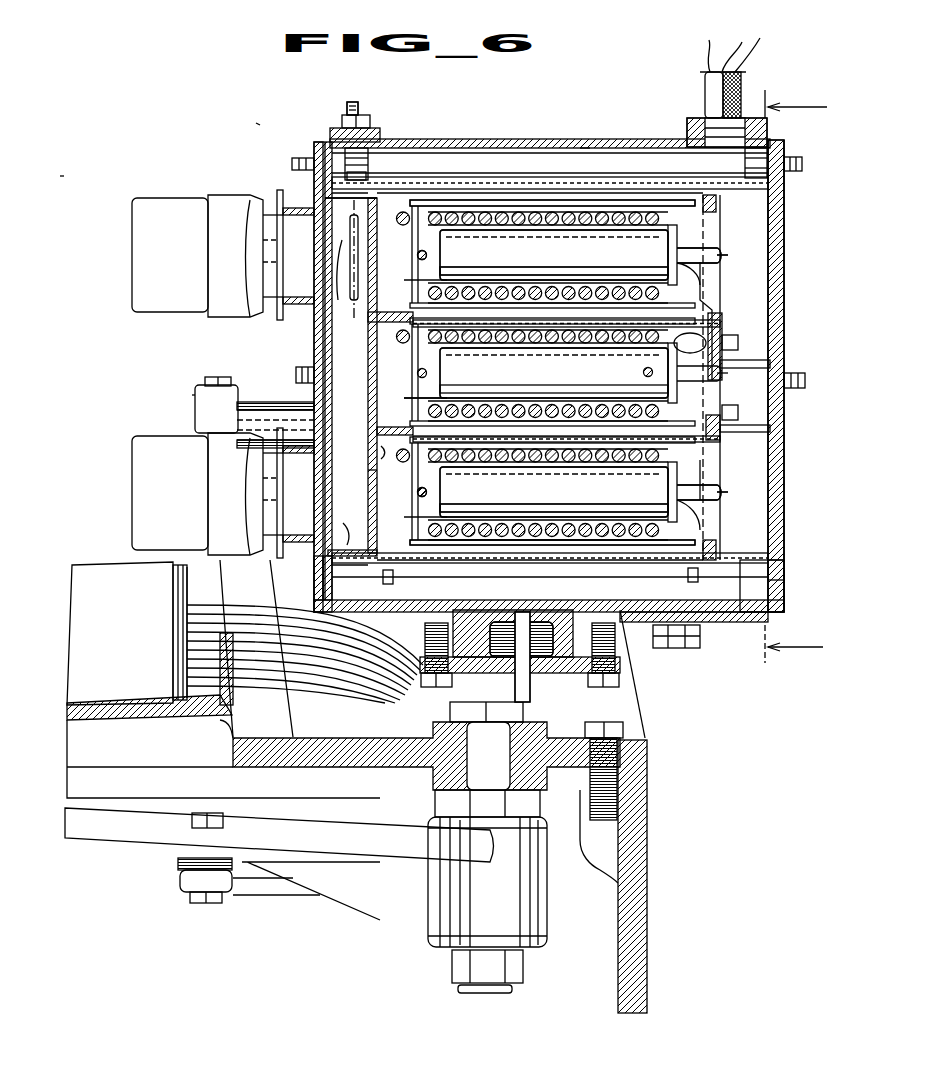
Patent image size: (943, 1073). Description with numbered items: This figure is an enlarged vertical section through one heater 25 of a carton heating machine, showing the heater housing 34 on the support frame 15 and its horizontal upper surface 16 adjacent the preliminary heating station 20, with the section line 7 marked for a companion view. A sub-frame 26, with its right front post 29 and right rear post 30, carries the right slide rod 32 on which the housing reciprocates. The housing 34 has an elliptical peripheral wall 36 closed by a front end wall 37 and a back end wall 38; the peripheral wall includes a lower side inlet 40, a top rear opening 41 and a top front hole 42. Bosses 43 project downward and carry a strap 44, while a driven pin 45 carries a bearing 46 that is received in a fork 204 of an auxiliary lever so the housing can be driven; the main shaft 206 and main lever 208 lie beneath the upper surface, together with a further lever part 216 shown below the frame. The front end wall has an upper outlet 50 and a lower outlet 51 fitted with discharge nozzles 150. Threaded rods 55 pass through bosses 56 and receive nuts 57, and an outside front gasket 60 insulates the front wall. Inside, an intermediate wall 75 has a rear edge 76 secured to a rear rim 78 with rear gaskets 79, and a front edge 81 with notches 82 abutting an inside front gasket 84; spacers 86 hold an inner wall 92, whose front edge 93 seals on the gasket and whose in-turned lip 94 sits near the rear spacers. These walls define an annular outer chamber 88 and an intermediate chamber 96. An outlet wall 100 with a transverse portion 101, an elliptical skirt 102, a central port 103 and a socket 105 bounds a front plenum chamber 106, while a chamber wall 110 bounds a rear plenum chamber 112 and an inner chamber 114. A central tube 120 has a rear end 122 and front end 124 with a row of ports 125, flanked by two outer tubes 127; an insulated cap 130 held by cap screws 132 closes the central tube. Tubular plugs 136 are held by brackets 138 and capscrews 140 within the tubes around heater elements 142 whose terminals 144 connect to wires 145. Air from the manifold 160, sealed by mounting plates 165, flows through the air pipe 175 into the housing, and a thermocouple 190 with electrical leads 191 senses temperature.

The section line 7- 7 is at (796, 377).
The frame 15 is at (650, 827).
The horizontal upper surface 16 is at (90, 770).
The preliminary heating station 20 is at (62, 175).
The heater 25 is at (258, 123).
The sub-frame 26 is at (650, 757).
The right front post 29 is at (203, 393).
The right rear post 30 is at (633, 730).
The right slide rod 32 is at (300, 408).
The heater housing 34 is at (552, 130).
The peripheral wall 36 is at (497, 140).
The front end wall 37 is at (312, 160).
The back end wall 38 is at (781, 213).
The lower side inlet 40 is at (753, 580).
The top rear opening 41 is at (710, 127).
The top front hole 42 is at (352, 133).
The bosses 43 is at (620, 653).
The strap 44 is at (462, 677).
The driven pin 45 is at (527, 673).
The bearing 46 is at (548, 660).
The upper outlet 50 is at (293, 285).
The lower outlet 51 is at (292, 467).
The threaded rods 55 is at (668, 163).
The inwardly projecting bosses 56 is at (363, 153).
The nuts 57 is at (304, 158).
The outside front gasket 60 is at (332, 528).
The intermediate wall 75 is at (585, 150).
The rear edge 76 is at (786, 572).
The rear rim 78 is at (777, 140).
The rear gaskets 79 is at (780, 605).
The front edge 81 is at (318, 572).
The notches 82 is at (345, 575).
The inside front gasket 84 is at (320, 585).
The spacers 86 is at (412, 203).
The outer chamber 88 is at (532, 153).
The inner wall 92 is at (452, 193).
The front edge 93 is at (340, 197).
The in-turned lip 94 is at (708, 200).
The intermediate chamber 96 is at (620, 187).
The outlet wall 100 is at (381, 450).
The transverse portion 101 is at (377, 472).
The elliptical skirt 102 is at (351, 520).
The central port 103 is at (367, 403).
The socket 105 is at (408, 340).
The front plenum chamber 106 is at (330, 340).
The chamber wall 110 is at (712, 210).
The rear plenum chamber 112 is at (745, 283).
The inner chamber 114 is at (397, 273).
The central tube 120 is at (581, 323).
The rear end 122 is at (722, 415).
The front end 124 is at (387, 427).
The ports 125 is at (677, 347).
The outer tubes 127 is at (417, 235).
The insulated cap 130 is at (727, 365).
The cap screws 132 is at (735, 430).
The tubular plugs 136 is at (558, 263).
The brackets 138 is at (714, 271).
The capscrews 140 is at (722, 305).
The heater elements 142 is at (617, 282).
The terminals 144 is at (730, 256).
The wires 145 is at (730, 41).
The discharge nozzles 150 is at (140, 240).
The manifold 160 is at (146, 666).
The mounting plates 165 is at (183, 622).
The air pipe 175 is at (333, 700).
The thermocouple 190 is at (352, 262).
The electrical leads 191 is at (357, 103).
The forks 204 is at (487, 650).
The main shaft 206 is at (490, 990).
The main lever 208 is at (263, 833).
The bracket 216 is at (273, 890).